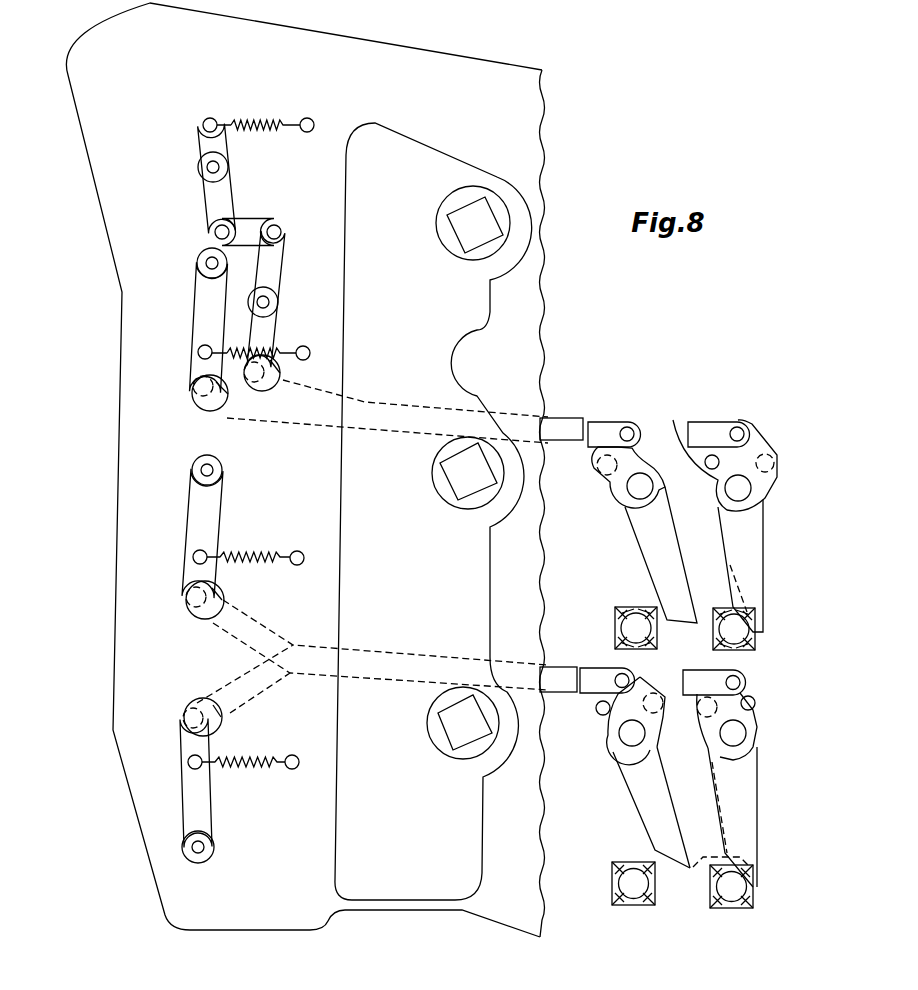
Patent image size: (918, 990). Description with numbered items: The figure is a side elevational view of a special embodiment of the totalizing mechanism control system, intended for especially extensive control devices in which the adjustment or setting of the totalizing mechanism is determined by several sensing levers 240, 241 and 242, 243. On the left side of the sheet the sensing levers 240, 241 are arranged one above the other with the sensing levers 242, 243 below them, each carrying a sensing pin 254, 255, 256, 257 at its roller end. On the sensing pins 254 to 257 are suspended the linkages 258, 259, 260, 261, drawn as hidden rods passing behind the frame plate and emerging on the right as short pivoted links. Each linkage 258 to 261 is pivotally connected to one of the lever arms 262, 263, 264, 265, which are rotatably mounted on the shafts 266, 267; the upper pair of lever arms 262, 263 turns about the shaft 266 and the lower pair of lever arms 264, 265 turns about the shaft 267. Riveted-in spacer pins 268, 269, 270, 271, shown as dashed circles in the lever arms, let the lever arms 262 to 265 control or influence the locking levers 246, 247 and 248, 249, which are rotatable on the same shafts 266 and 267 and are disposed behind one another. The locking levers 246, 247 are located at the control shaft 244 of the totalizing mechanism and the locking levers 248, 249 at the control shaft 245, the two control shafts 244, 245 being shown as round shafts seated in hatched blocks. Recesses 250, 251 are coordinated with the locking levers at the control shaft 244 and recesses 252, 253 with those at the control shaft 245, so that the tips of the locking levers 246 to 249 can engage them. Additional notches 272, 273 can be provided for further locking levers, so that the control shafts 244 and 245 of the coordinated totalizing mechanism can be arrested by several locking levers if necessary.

The sensing lever 240 is at (195, 258).
The sensing lever 241 is at (287, 247).
The sensing lever 242 is at (190, 505).
The sensing lever 243 is at (205, 786).
The control shaft 244 is at (613, 614).
The control shaft 245 is at (636, 900).
The locking lever 246 is at (640, 527).
The locking lever 247 is at (728, 536).
The locking lever 248 is at (640, 805).
The locking lever 249 is at (727, 800).
The recess 250 is at (638, 612).
The recess 251 is at (730, 566).
The recess 252 is at (645, 862).
The recess 253 is at (705, 870).
The sensing pin 254 is at (192, 395).
The sensing pin 255 is at (253, 393).
The sensing pin 256 is at (190, 612).
The sensing pin 257 is at (185, 715).
The linkage 258 is at (600, 416).
The linkage 259 is at (697, 420).
The linkage 260 is at (592, 692).
The linkage 261 is at (698, 700).
The lever arm 262 is at (612, 486).
The lever arm 263 is at (740, 418).
The lever arm 264 is at (612, 746).
The lever arm 265 is at (665, 797).
The shaft 266 is at (647, 470).
The shaft 267 is at (740, 782).
The spacer pin 268 is at (597, 467).
The spacer pin 269 is at (772, 482).
The spacer pin 270 is at (660, 697).
The spacer pin 271 is at (735, 760).
The notch 272 is at (613, 640).
The notch 273 is at (713, 645).